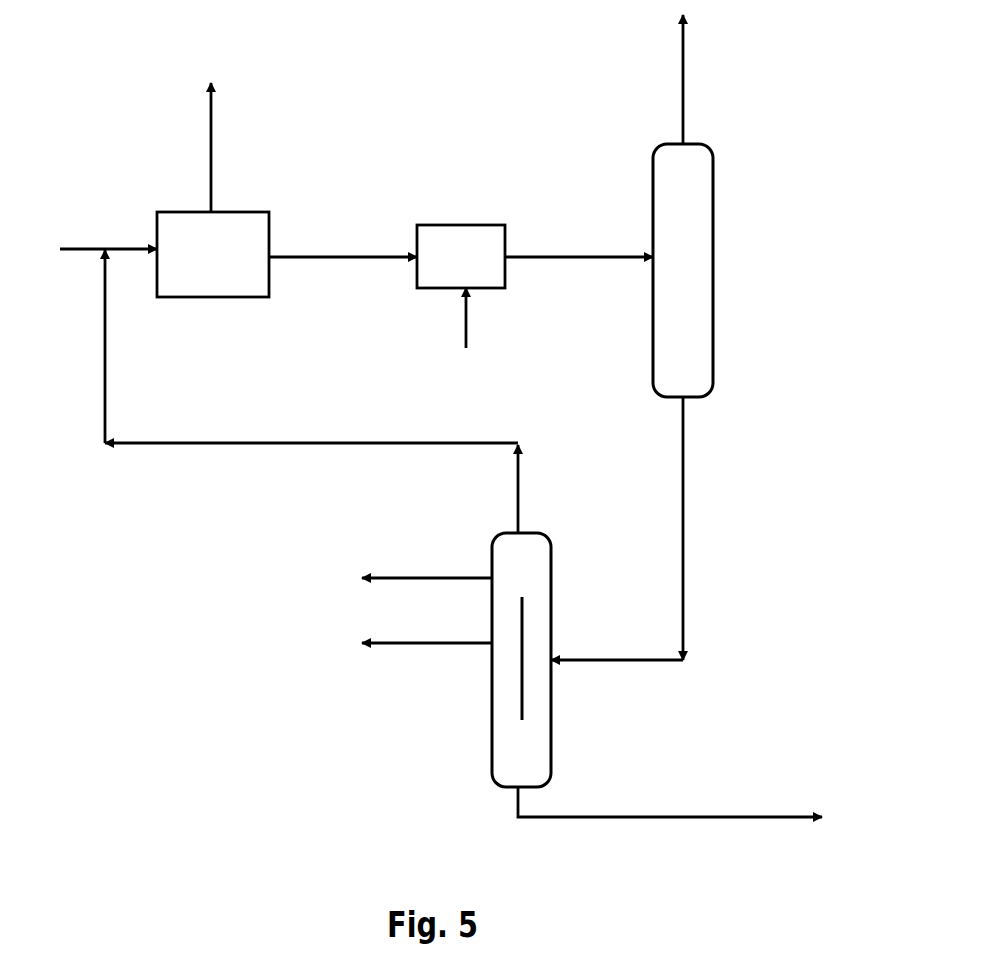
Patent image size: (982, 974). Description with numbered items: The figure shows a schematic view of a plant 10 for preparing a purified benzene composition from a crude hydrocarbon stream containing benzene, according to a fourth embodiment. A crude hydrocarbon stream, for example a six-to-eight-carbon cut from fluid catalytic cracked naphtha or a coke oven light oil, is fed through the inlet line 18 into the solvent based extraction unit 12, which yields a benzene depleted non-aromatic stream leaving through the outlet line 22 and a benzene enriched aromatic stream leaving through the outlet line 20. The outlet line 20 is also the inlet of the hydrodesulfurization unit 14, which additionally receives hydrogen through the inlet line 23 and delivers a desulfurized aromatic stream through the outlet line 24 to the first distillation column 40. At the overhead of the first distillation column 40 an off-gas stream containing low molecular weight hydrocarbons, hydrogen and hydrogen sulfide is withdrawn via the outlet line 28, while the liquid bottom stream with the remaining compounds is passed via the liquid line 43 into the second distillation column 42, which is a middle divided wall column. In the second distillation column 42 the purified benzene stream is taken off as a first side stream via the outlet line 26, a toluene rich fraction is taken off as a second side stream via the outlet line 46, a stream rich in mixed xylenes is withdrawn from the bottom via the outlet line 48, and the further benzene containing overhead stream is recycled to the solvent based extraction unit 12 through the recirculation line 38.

The plant 10 is at (206, 758).
The solvent based extraction unit 12 is at (285, 215).
The hydrodesulfurization unit 14 is at (520, 313).
The inlet line 18 is at (73, 243).
The outlet line 20 is at (322, 298).
The outlet line 22 is at (250, 130).
The inlet line 23 is at (462, 322).
The outlet line 24 is at (565, 197).
The outlet line 26 is at (405, 577).
The outlet line 28 is at (718, 78).
The recirculation line 38 is at (168, 485).
The first distillation column 40 is at (737, 228).
The second distillation column 42 is at (582, 540).
The liquid line 43 is at (722, 444).
The outlet line 46 is at (408, 680).
The outlet line 48 is at (718, 867).